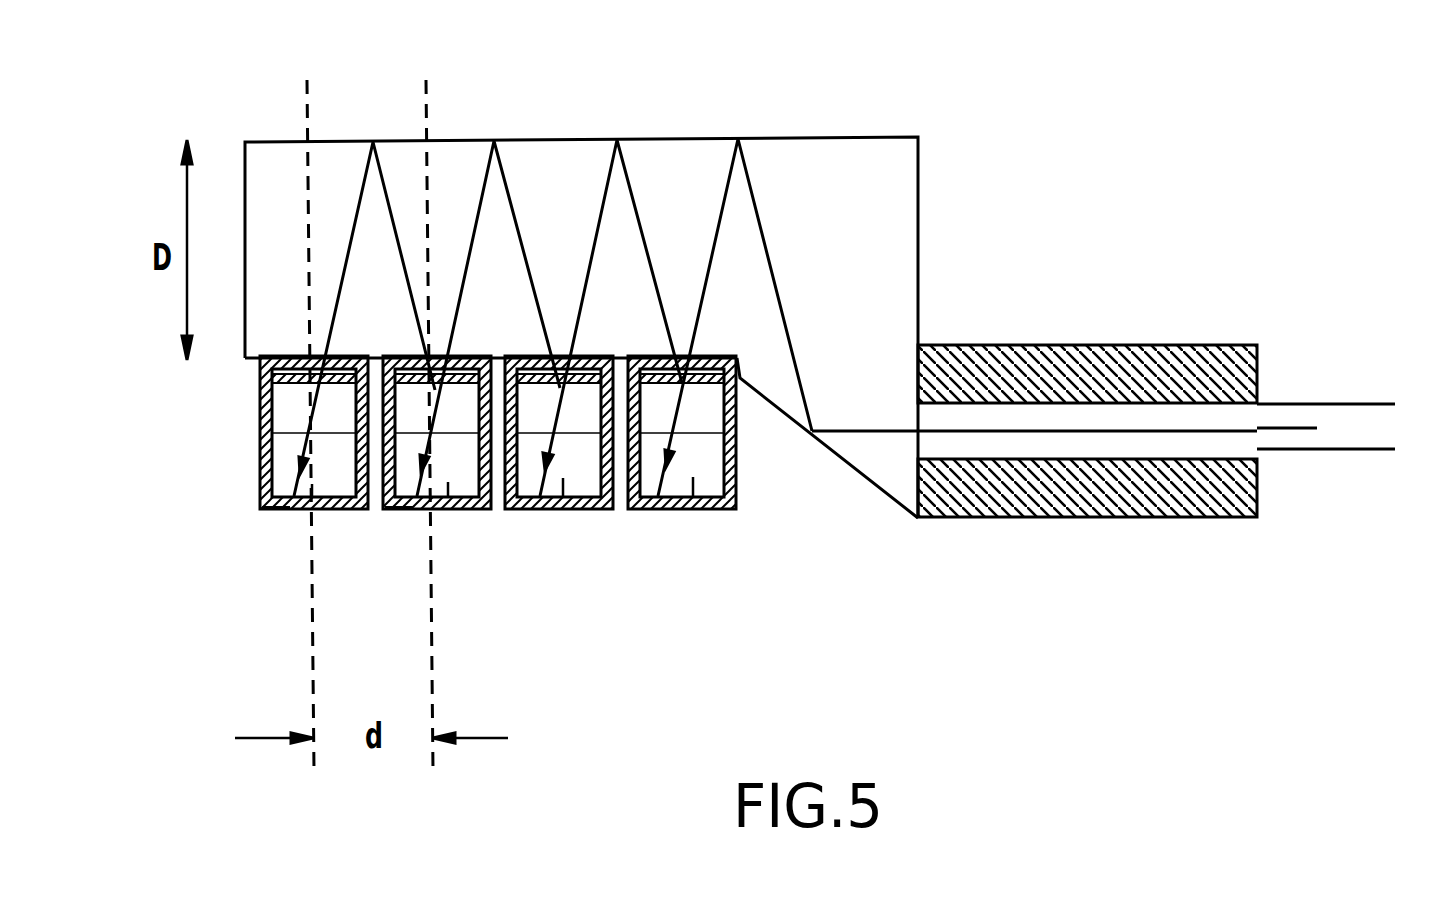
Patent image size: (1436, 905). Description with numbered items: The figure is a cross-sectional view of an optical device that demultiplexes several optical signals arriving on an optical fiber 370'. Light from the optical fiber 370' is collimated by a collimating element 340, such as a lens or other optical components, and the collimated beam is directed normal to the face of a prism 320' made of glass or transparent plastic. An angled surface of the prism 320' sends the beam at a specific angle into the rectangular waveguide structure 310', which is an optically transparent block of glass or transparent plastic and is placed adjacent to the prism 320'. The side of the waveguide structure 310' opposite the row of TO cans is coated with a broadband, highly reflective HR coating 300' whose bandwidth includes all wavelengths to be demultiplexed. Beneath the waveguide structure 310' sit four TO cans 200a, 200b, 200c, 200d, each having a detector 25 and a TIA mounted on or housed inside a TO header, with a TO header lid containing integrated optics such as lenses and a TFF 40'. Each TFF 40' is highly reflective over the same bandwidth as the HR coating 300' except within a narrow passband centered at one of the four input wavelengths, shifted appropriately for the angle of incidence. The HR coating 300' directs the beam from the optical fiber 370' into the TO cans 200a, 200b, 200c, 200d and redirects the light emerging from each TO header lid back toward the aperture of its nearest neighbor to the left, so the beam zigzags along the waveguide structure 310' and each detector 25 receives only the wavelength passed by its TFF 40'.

The HR coating 300' is at (770, 341).
The waveguide structure 310' is at (655, 322).
The prism 320' is at (827, 437).
The collimating element 340 is at (1090, 378).
The optical fiber 370' is at (1333, 353).
The TO can 200a is at (700, 507).
The TO can 200b is at (562, 510).
The TO can 200c is at (457, 510).
The TO can 200d is at (288, 472).
The detector 25 is at (283, 510).
The TFF 40' is at (553, 357).